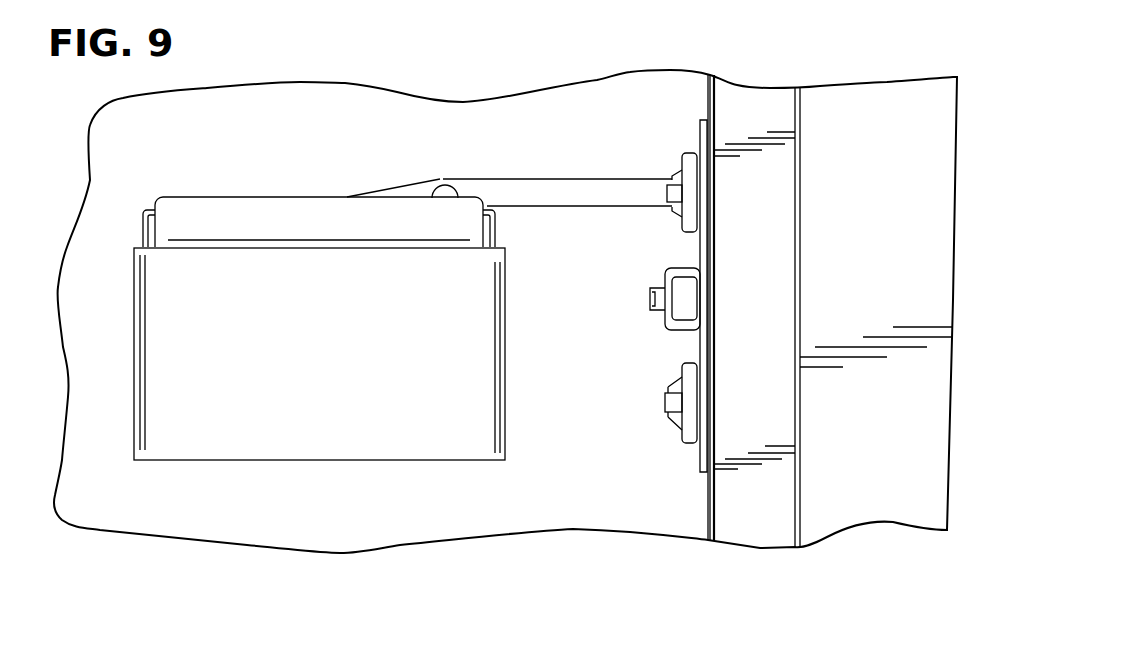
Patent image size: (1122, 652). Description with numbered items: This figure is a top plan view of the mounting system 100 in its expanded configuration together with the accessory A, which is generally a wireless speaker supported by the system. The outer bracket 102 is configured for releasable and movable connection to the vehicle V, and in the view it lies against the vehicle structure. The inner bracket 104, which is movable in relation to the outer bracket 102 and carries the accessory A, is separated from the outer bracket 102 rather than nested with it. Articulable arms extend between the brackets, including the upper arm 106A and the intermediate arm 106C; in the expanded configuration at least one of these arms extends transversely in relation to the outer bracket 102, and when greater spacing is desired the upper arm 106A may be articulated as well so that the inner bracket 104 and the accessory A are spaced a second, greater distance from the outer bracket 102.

The mounting system 100 is at (722, 275).
The outer bracket 102 is at (712, 178).
The inner bracket 104 is at (302, 218).
The upper arm 106A is at (579, 178).
The intermediate arm 106C is at (406, 184).
The vehicle V is at (755, 423).
The accessory A is at (279, 397).